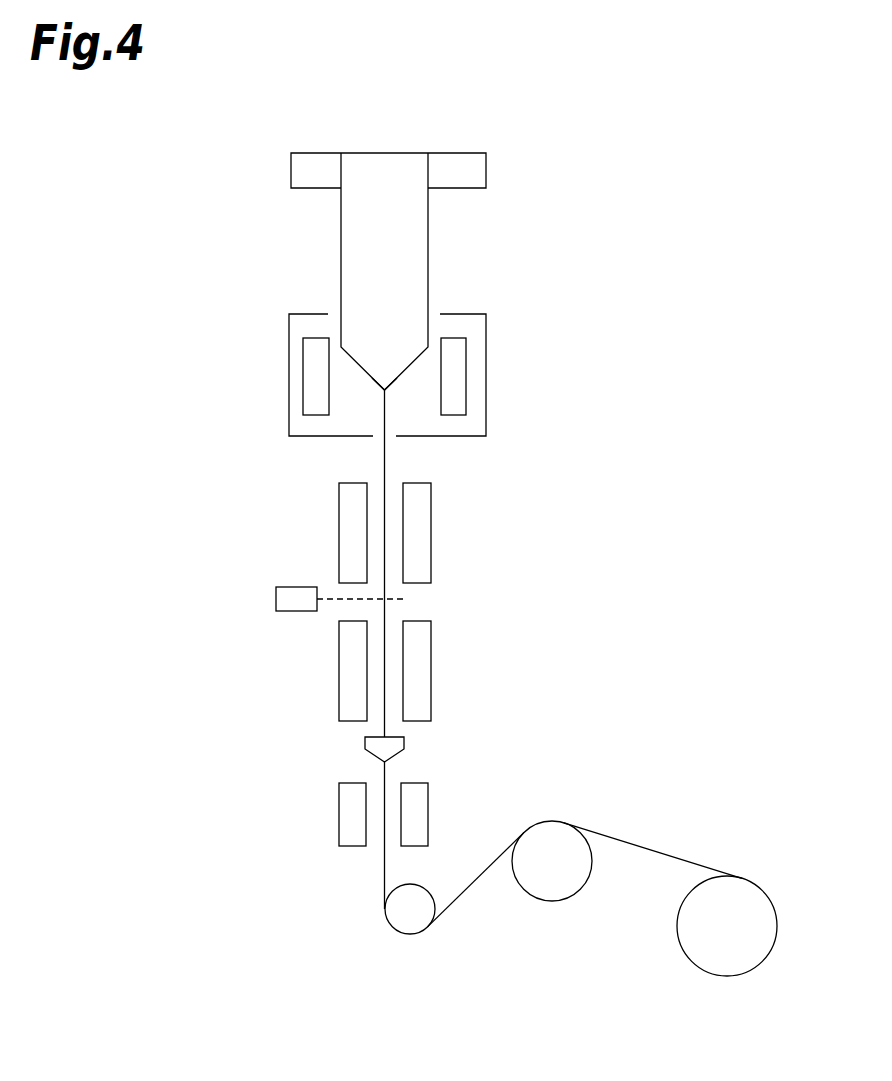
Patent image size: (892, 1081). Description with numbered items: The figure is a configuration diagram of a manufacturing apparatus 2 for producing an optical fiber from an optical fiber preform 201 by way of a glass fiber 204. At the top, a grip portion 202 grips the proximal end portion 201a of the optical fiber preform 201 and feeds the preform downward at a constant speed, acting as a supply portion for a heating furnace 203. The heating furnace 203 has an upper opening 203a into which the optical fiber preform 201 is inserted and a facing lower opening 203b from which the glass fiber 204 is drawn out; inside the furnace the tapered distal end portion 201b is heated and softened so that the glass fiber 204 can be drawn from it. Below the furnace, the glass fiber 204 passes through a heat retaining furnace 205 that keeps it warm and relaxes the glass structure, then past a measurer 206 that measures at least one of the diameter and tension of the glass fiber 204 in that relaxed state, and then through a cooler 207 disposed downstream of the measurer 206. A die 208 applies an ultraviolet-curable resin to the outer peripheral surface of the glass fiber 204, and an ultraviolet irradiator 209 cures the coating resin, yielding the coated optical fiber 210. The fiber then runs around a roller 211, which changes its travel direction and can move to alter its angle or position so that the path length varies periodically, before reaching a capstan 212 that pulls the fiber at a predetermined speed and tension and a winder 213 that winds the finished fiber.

The manufacturing apparatus 2 is at (240, 209).
The optical fiber preform 201 is at (428, 248).
The proximal end portion 201a is at (381, 152).
The distal end portion 201b is at (381, 388).
The grip portion 202 is at (487, 168).
The heating furnace 203 is at (487, 352).
The opening 203a is at (441, 316).
The opening 203b is at (397, 437).
The glass fiber 204 is at (383, 461).
The heat retaining furnace 205 is at (432, 528).
The measurer 206 is at (275, 600).
The cooler 207 is at (432, 668).
The die 208 is at (406, 742).
The ultraviolet irradiator 209 is at (429, 806).
The optical fiber 210 is at (383, 875).
The roller 211 is at (409, 930).
The capstan 212 is at (556, 902).
The winder 213 is at (727, 977).